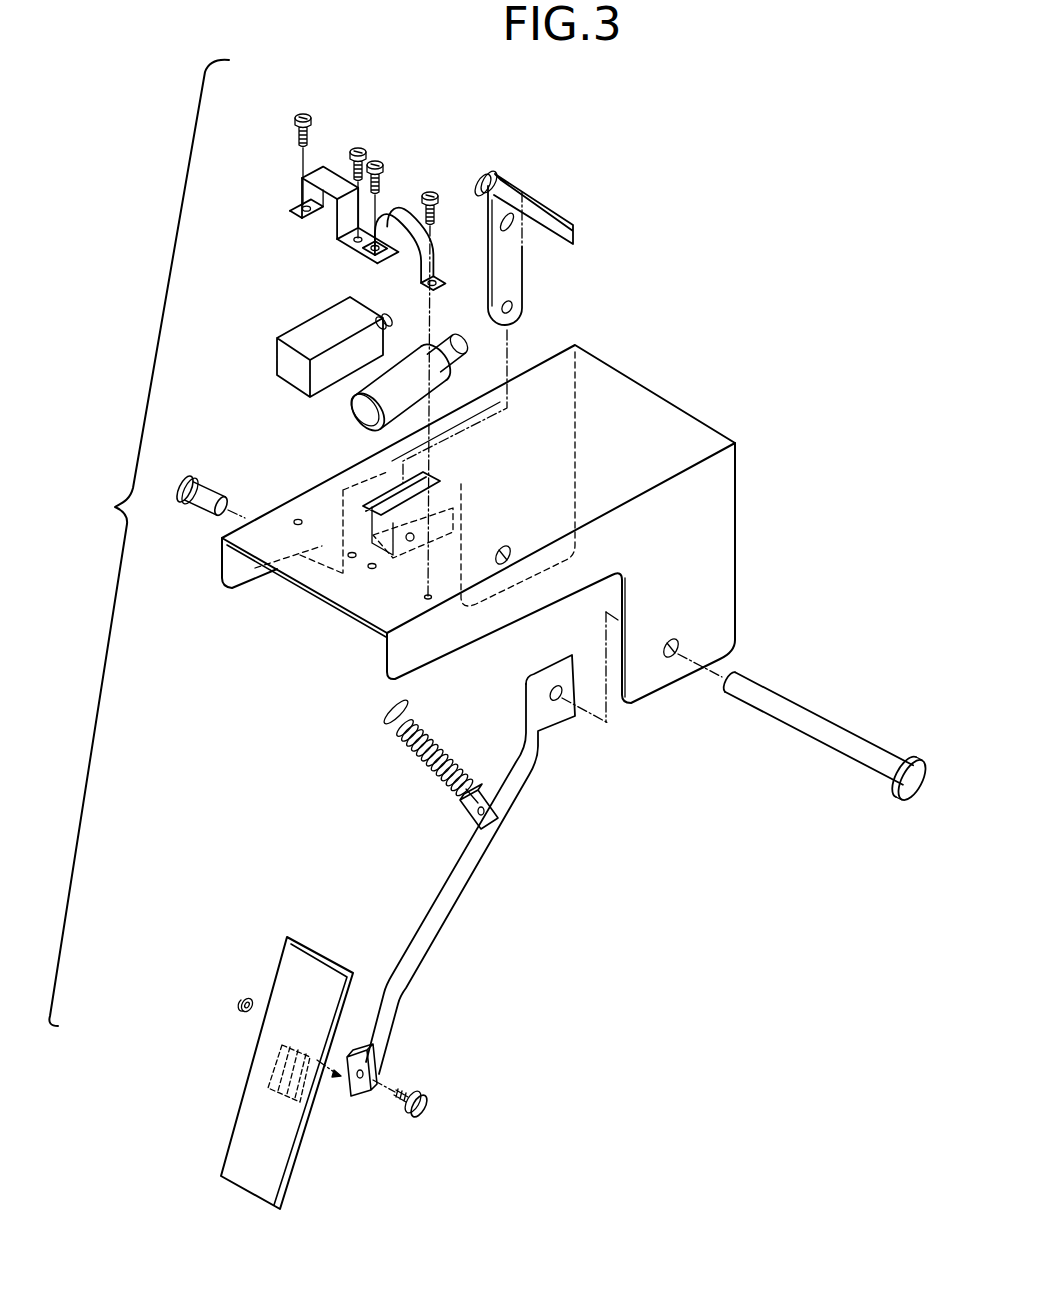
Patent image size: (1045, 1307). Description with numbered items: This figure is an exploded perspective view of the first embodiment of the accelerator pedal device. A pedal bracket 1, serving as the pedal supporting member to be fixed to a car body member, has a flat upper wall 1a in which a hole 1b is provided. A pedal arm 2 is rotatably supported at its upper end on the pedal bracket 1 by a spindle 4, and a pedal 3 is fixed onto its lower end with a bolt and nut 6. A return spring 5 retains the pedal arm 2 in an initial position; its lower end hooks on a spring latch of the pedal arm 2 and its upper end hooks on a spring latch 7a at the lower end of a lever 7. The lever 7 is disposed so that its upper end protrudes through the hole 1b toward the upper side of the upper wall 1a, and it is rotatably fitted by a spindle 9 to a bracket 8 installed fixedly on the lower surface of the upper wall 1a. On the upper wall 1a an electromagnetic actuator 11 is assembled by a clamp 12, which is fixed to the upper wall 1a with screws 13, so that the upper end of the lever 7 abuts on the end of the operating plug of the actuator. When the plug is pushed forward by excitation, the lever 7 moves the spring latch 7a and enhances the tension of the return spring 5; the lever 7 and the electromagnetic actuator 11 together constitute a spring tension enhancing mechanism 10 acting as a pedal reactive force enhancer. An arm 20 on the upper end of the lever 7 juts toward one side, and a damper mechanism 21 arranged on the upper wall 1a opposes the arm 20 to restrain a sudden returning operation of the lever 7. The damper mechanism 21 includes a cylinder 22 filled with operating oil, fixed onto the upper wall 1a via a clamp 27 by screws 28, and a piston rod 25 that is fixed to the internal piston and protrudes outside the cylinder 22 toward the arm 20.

The pedal bracket 1 is at (497, 526).
The upper wall 1a is at (628, 396).
The hole 1b is at (440, 476).
The pedal arm 2 is at (462, 879).
The pedal 3 is at (317, 968).
The spindle 4 is at (793, 716).
The return spring 5 is at (412, 755).
The bolt and nut 6 is at (241, 1004).
The lever 7 is at (544, 247).
The spring latch 7a is at (514, 310).
The bracket 8 is at (380, 512).
The spindle 9 is at (204, 487).
The spring tension enhancing mechanism 10 is at (419, 283).
The electromagnetic actuator 11 is at (318, 320).
The clamp 12 is at (317, 190).
The screws 13 is at (311, 120).
The arm 20 is at (537, 200).
The damper mechanism 21 is at (363, 433).
The cylinder 22 is at (352, 406).
The piston rod 25 is at (452, 350).
The clamp 27 is at (400, 230).
The screws 28 is at (431, 192).